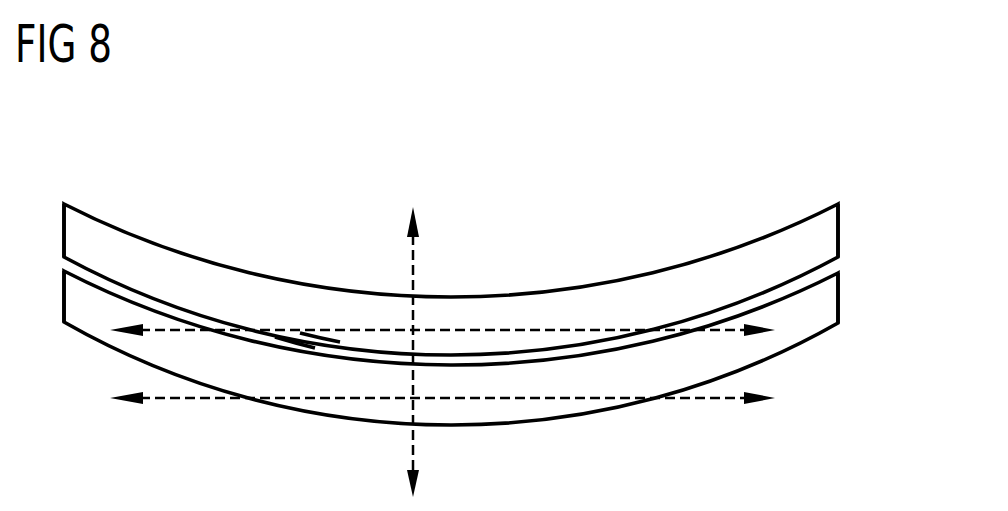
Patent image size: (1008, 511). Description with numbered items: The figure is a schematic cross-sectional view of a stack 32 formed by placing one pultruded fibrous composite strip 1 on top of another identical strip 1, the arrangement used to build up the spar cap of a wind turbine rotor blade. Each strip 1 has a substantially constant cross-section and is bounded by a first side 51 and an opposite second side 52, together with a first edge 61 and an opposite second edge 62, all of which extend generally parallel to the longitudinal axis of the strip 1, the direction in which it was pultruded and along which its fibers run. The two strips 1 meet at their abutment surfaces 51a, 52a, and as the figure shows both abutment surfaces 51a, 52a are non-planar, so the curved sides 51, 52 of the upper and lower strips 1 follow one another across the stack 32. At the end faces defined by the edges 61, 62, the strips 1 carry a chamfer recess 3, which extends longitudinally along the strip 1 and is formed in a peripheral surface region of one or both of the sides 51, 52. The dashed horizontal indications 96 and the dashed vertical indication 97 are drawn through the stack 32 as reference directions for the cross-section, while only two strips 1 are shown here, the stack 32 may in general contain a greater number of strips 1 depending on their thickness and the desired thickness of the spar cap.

The strip 1 is at (798, 308).
The chamfer recess 3 is at (858, 281).
The stack 32 is at (174, 189).
The first side 51 is at (560, 252).
The abutment surface 51a is at (318, 357).
The second side 52 is at (586, 438).
The abutment surface 52a is at (296, 347).
The first edge 61 is at (63, 230).
The second edge 62 is at (839, 229).
The lateral displacement direction 96 is at (717, 332).
The vertical displacement axis 97 is at (415, 258).